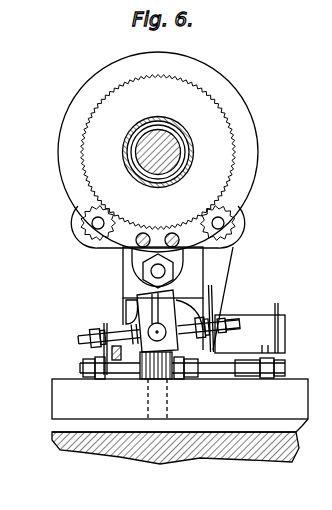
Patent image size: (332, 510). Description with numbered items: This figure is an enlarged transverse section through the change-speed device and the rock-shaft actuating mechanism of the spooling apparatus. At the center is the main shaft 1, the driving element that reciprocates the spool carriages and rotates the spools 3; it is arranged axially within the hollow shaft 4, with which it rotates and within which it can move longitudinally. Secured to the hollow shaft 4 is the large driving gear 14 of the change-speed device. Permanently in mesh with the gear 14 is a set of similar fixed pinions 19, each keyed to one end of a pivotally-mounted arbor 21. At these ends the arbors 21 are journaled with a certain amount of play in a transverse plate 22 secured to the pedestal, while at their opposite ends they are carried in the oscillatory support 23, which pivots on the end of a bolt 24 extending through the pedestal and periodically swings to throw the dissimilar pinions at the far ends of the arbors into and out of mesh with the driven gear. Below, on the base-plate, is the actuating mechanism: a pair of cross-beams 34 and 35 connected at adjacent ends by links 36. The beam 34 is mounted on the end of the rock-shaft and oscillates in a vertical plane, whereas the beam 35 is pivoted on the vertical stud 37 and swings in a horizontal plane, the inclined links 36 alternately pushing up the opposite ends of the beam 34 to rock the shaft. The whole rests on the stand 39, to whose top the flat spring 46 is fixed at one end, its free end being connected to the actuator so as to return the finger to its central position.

The main shaft 1 is at (170, 161).
The spools 3 is at (228, 100).
The hollow shaft 4 is at (191, 148).
The gear 14 is at (158, 152).
The fixed pinions 19 is at (75, 233).
The arbors 21 is at (98, 223).
The transverse plate 22 is at (124, 240).
The oscillatory carrier or support 23 is at (213, 270).
The bolt 24 is at (158, 271).
The cross-beam 34 is at (78, 341).
The cross-beam 35 is at (80, 368).
The links 36 is at (97, 366).
The stud 37 is at (155, 373).
The stand 39 is at (0, 438).
The spring 46 is at (282, 330).